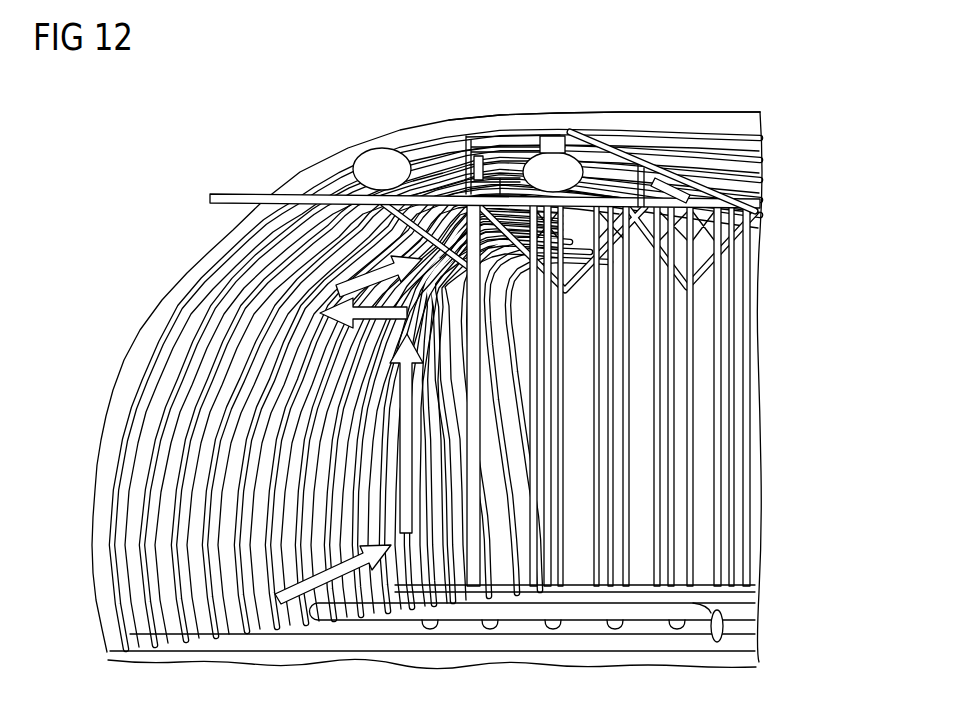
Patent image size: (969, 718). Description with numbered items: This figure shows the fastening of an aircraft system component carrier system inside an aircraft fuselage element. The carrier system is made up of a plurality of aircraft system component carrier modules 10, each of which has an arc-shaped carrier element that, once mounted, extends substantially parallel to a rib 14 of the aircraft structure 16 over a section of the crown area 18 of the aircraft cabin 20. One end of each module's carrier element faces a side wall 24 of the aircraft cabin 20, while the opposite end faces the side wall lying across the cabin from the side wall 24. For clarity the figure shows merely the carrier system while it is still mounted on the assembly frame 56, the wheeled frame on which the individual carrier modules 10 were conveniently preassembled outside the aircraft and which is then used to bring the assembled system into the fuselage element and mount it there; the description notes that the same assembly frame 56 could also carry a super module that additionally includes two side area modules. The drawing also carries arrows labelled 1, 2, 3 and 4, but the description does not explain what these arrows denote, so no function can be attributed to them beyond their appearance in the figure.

The first movement direction 1 is at (333, 574).
The second movement direction 2 is at (398, 433).
The third movement direction 3 is at (363, 332).
The fourth movement direction / support beam 4 is at (485, 226).
The aircraft system component carrier module 10 is at (493, 136).
The rib 14 is at (227, 280).
The aircraft structure 16 is at (770, 98).
The crown area 18 is at (573, 88).
The aircraft cabin 20 is at (577, 557).
The side wall 24 is at (86, 405).
The assembly frame 56 is at (776, 412).